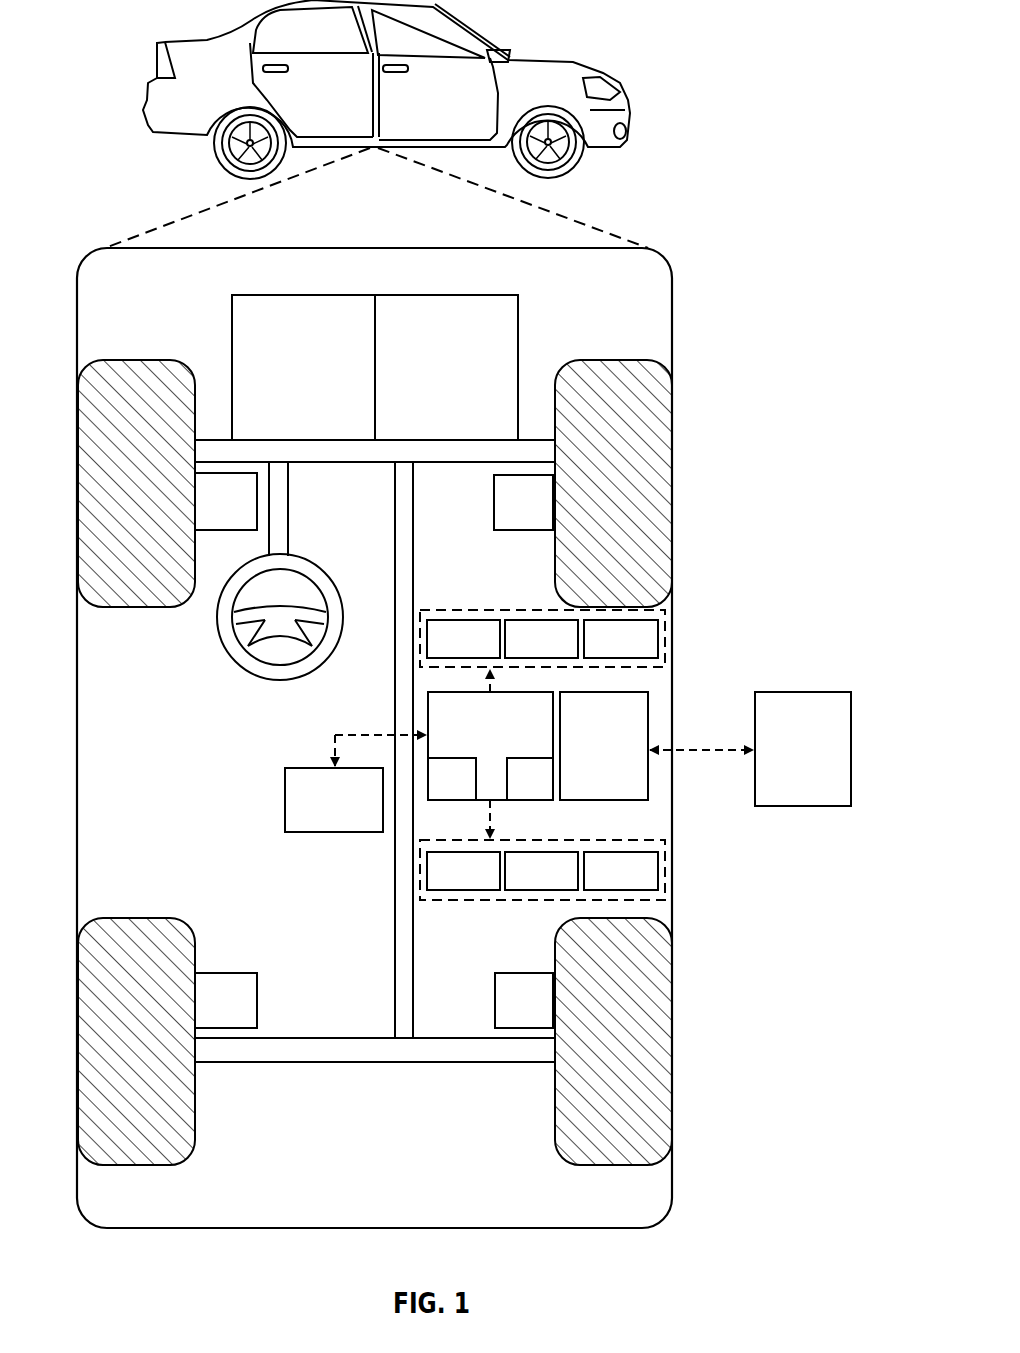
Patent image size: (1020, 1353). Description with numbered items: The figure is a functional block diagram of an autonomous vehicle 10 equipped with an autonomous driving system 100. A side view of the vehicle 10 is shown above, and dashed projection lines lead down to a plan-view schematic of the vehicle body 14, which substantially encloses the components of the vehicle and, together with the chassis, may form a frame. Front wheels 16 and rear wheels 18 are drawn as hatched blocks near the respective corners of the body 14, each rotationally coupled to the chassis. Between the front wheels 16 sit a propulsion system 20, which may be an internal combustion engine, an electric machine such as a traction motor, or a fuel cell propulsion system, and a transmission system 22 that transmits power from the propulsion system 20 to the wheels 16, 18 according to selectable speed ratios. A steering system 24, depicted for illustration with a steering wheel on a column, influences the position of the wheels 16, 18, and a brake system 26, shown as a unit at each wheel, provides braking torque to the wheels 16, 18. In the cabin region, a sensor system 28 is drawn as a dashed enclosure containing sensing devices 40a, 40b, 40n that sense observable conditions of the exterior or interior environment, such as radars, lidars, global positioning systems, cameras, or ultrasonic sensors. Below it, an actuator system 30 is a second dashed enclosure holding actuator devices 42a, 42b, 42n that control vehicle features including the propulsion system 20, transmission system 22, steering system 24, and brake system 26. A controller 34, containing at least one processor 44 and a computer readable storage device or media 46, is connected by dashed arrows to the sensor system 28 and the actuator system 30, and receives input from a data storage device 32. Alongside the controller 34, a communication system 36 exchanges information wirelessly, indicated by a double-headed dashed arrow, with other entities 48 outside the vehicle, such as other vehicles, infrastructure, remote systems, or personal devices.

The vehicle 10 is at (150, 72).
The autonomous driving system 100 is at (697, 262).
The body 14 is at (77, 703).
The front wheels 16 is at (135, 360).
The rear wheels 18 is at (138, 1165).
The propulsion system 20 is at (303, 367).
The transmission system 22 is at (446, 367).
The steering system 24 is at (294, 530).
The brake system 26 is at (374, 750).
The sensor system 28 is at (505, 610).
The actuator system 30 is at (507, 900).
The data storage device 32 is at (334, 800).
The controller 34 is at (490, 746).
The communication system 36 is at (604, 746).
The sensing device 40a is at (463, 639).
The sensing device 40b is at (541, 639).
The sensing device 40n is at (621, 639).
The actuator device 42a is at (463, 871).
The actuator device 42b is at (541, 871).
The actuator device 42n is at (621, 871).
The processor 44 is at (452, 779).
The computer readable storage device or media 46 is at (530, 779).
The other entities 48 is at (803, 749).